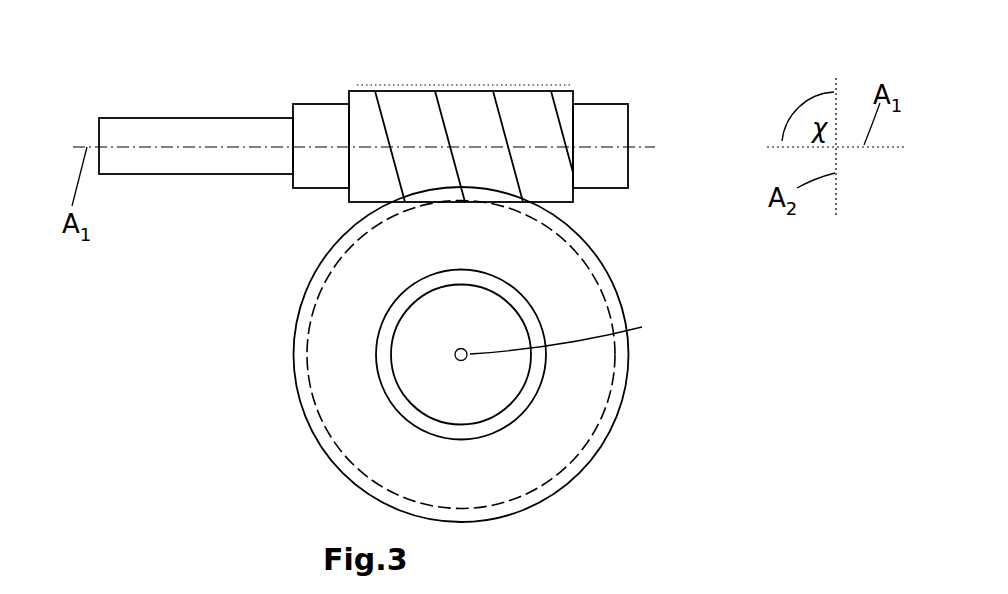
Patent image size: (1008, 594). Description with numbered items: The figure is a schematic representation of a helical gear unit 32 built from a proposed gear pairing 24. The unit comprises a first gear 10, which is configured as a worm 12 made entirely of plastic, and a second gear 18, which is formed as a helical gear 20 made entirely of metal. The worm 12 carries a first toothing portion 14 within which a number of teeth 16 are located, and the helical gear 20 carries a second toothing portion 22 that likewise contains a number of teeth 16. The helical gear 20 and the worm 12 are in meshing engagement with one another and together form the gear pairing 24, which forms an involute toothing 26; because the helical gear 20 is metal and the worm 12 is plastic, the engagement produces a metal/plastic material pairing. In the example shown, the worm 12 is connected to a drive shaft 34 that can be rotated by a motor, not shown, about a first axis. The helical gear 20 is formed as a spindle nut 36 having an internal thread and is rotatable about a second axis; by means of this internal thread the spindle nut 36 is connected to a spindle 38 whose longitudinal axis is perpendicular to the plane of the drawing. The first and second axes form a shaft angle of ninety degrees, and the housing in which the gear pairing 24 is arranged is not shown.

The first gear 10 is at (414, 134).
The worm 12 is at (594, 63).
The first toothing portion 14 is at (456, 110).
The teeth 16 is at (620, 398).
The second gear 18 is at (434, 354).
The helical gear 20 is at (434, 354).
The second toothing portion 22 is at (529, 355).
The gear pairing 24 is at (517, 354).
The involute toothing 26 is at (604, 222).
The helical gear unit 32 is at (226, 322).
The drive shaft 34 is at (155, 160).
The spindle nut 36 is at (280, 444).
The spindle 38 is at (490, 381).